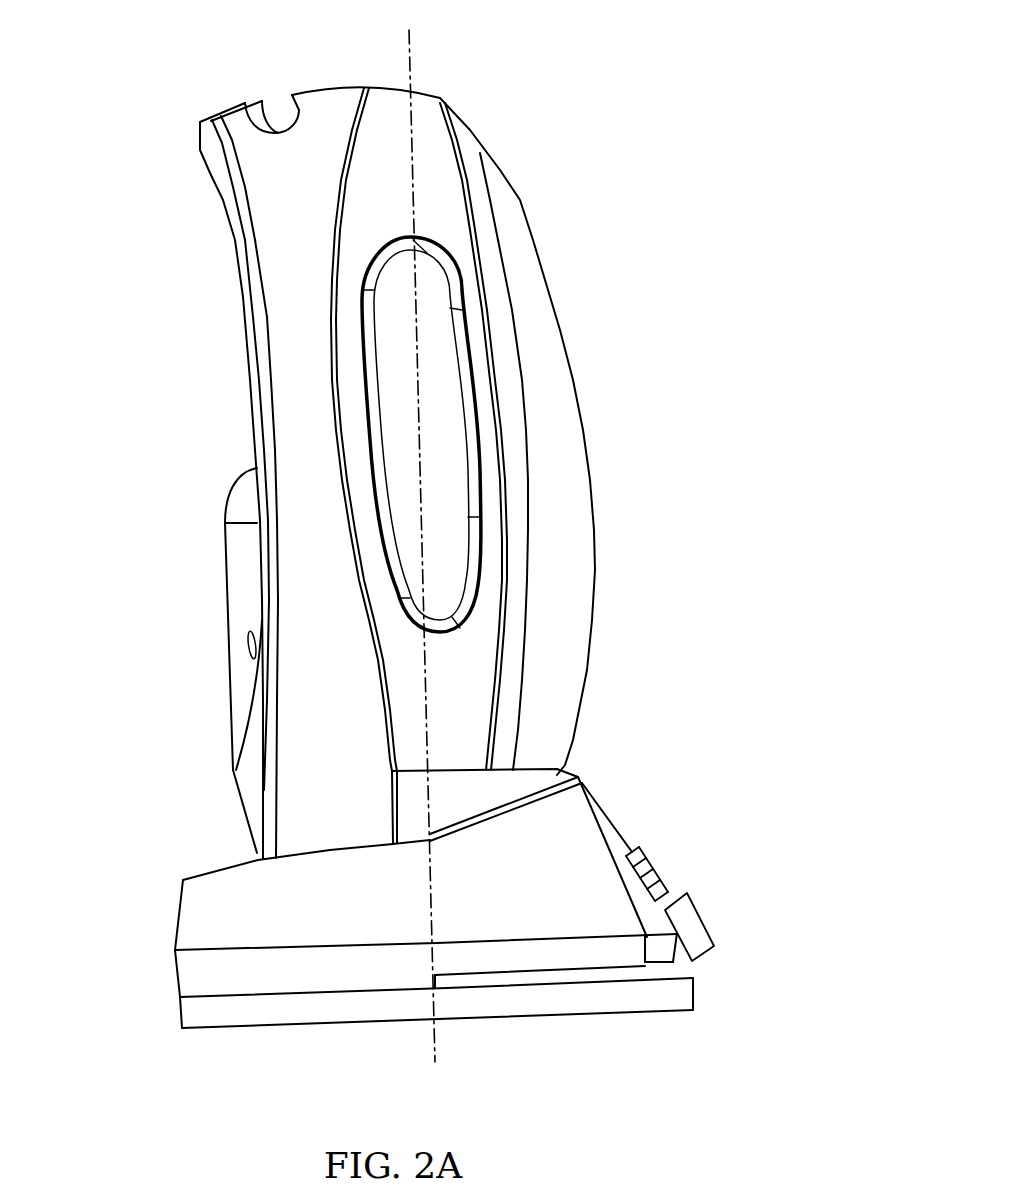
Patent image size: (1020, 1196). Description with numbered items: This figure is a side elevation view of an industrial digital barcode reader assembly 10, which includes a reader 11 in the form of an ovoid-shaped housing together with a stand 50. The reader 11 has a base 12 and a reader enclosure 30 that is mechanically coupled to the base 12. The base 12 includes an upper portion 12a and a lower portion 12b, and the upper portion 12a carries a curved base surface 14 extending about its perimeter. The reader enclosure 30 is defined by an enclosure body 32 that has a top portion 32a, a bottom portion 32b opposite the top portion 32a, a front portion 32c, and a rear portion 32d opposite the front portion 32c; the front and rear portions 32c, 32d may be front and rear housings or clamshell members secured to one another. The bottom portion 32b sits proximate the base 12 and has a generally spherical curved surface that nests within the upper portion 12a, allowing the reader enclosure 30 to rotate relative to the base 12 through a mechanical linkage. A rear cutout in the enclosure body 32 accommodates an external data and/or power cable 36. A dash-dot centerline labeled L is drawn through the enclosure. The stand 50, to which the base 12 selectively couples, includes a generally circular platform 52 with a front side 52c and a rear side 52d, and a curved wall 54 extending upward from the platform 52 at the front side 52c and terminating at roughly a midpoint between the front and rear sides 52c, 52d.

The barcode reader assembly 10 is at (692, 396).
The reader 11 is at (200, 505).
The base 12 is at (608, 863).
The upper portion 12a is at (620, 801).
The lower portion 12b is at (665, 943).
The curved base surface 14 is at (563, 917).
The reader enclosure 30 is at (472, 134).
The enclosure body 32 is at (521, 212).
The top portion 32a is at (372, 67).
The bottom portion 32b is at (228, 846).
The front portion 32c is at (212, 296).
The rear portion 32d is at (587, 300).
The external data and/or power cable 36 is at (708, 935).
The stand 50 is at (193, 966).
The platform 52 is at (187, 1015).
The front side 52c is at (160, 988).
The rear side 52d is at (711, 992).
The wall 54 is at (178, 908).
The central axis L is at (412, 66).